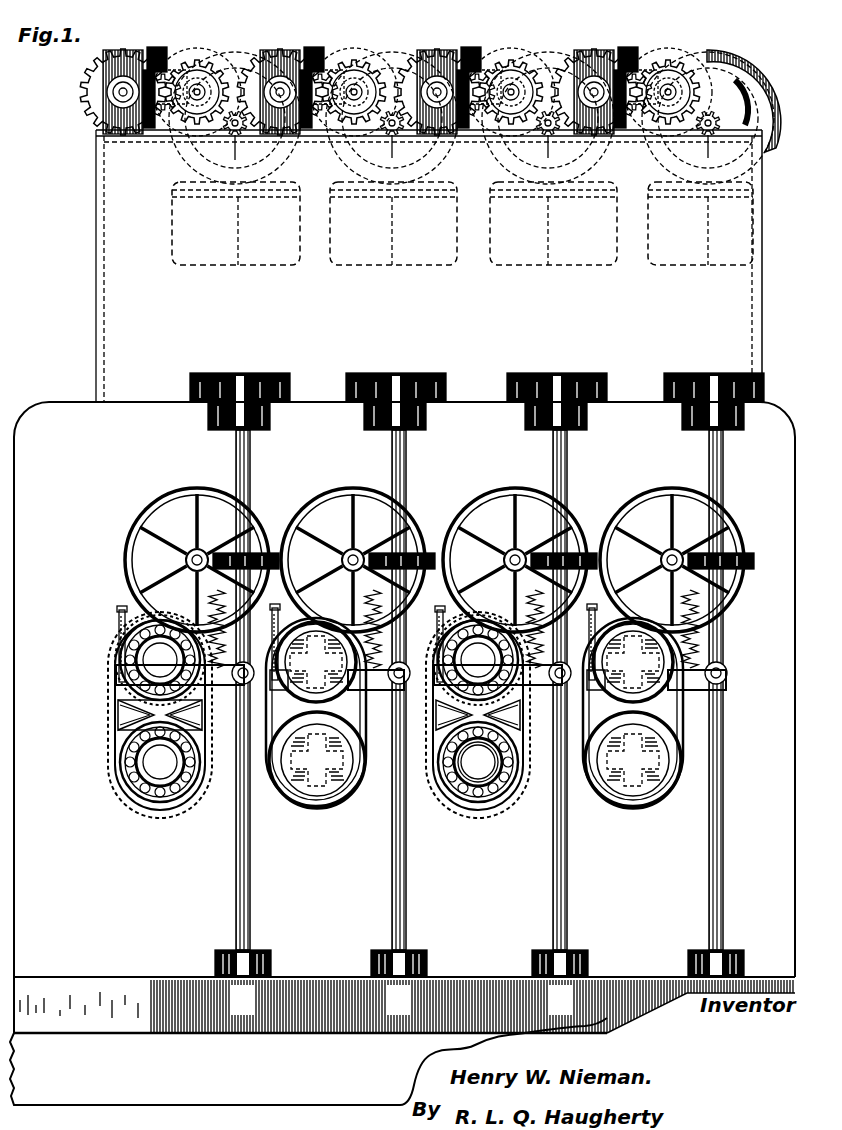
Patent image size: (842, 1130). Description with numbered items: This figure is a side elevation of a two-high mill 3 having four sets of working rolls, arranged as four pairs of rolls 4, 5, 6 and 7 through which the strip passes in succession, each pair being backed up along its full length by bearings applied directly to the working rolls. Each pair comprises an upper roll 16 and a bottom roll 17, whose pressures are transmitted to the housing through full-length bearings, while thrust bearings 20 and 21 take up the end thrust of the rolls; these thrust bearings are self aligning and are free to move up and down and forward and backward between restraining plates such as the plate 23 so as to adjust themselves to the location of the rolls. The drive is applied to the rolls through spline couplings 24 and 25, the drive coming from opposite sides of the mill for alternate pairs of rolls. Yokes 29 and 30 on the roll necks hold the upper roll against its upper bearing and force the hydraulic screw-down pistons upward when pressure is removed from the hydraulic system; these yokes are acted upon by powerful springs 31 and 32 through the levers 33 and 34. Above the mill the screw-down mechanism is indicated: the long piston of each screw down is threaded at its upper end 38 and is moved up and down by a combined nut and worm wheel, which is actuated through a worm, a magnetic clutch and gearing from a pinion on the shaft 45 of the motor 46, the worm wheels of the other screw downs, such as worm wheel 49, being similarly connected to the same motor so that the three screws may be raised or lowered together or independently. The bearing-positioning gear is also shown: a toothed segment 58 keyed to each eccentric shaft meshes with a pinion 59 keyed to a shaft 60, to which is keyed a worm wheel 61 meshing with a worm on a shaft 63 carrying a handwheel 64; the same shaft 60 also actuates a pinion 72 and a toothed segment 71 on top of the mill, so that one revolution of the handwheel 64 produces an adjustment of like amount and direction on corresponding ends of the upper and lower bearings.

The mill 3 is at (55, 403).
The pair of rolls 4 is at (120, 724).
The pair of rolls 5 is at (280, 706).
The pair of rolls 6 is at (478, 762).
The pair of rolls 7 is at (633, 760).
The upper roll 16 is at (118, 708).
The bottom roll 17 is at (118, 752).
The thrust bearing 20 is at (114, 650).
The thrust bearing 21 is at (158, 802).
The restraining plate 23 is at (122, 782).
The spline coupling 24 is at (468, 636).
The spline coupling 25 is at (310, 792).
The yoke 29 is at (474, 662).
The yoke 30 is at (118, 680).
The spring 31 is at (310, 636).
The spring 32 is at (380, 648).
The lever 33 is at (544, 716).
The lever 34 is at (738, 702).
The threaded upper end of piston 38 is at (168, 50).
The motor shaft 45 is at (226, 136).
The motor 46 is at (262, 60).
The worm wheel 49 is at (150, 115).
The toothed segment 58 is at (356, 976).
The pinion 59 is at (290, 1035).
The shaft 60 is at (250, 920).
The worm wheel 61 is at (208, 548).
The shaft 63 is at (184, 561).
The handwheel 64 is at (246, 528).
The toothed segment 71 is at (292, 398).
The pinion 72 is at (385, 378).